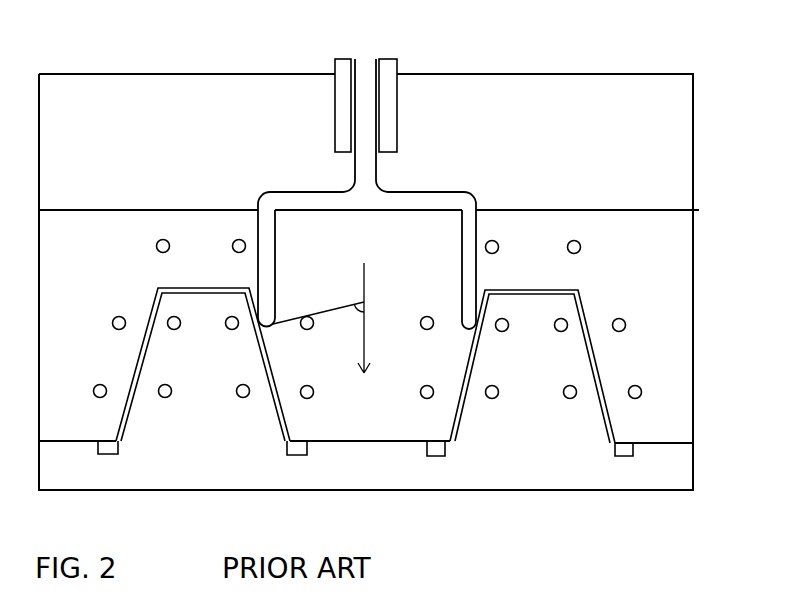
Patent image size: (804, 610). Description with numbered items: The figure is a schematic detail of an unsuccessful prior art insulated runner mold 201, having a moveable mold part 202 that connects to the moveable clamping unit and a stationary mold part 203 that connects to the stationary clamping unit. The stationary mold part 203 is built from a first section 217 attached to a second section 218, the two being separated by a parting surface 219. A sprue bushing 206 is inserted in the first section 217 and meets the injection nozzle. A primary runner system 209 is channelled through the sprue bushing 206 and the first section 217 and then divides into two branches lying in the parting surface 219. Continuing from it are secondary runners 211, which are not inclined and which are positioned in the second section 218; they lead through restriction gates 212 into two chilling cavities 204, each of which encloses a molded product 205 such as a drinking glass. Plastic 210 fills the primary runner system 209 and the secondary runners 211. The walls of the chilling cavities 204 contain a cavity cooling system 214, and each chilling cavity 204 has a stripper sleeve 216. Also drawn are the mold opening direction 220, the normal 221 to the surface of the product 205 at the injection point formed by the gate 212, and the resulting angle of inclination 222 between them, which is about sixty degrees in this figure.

The insulated runner mold 201 is at (693, 403).
The moveable mold part 202 is at (693, 473).
The stationary mold part 203 is at (693, 187).
The chilling cavity 204 is at (587, 310).
The molded product 205 is at (592, 358).
The sprue bushing 206 is at (387, 73).
The primary runner system 209 is at (383, 183).
The plastic 210 is at (365, 85).
The secondary runners 211 is at (477, 225).
The restriction gate 212 is at (470, 333).
The cavity cooling system 214 is at (567, 399).
The stripper sleeve 216 is at (622, 452).
The first section 217 is at (693, 101).
The second section 218 is at (693, 322).
The parting surface 219 is at (618, 210).
The mold opening direction 220 is at (363, 332).
The normal 221 is at (318, 304).
The angle of inclination 222 is at (340, 321).